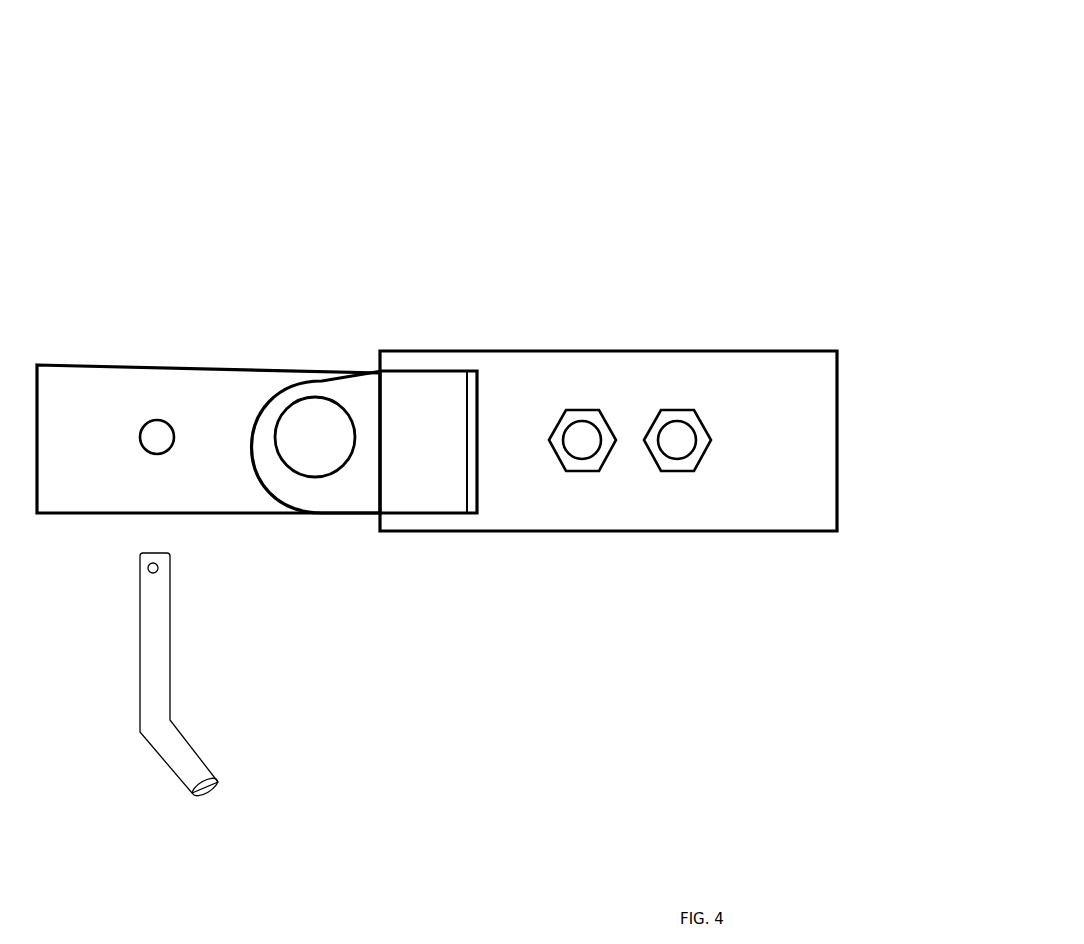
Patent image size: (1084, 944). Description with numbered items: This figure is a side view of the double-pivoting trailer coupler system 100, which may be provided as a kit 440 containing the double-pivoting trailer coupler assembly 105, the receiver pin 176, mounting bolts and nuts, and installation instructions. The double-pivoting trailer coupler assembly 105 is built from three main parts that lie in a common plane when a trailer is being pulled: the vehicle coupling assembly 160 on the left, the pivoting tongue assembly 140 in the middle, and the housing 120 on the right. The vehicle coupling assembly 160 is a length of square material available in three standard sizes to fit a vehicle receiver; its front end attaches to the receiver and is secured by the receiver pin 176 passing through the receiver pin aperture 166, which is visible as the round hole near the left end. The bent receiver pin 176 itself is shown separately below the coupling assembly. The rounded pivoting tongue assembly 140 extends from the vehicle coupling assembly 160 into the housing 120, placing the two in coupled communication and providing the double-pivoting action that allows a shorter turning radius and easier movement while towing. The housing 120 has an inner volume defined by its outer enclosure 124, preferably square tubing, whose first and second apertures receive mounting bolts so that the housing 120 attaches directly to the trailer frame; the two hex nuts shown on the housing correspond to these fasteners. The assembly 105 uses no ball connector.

The double-pivoting trailer coupler system 100 is at (614, 64).
The kit 440 is at (636, 90).
The double-pivoting trailer coupler assembly 105 is at (660, 115).
The vehicle coupling assembly 160 is at (224, 360).
The receiver pin aperture 166 is at (157, 432).
The housing 120 is at (595, 535).
The outer enclosure 124 is at (653, 345).
The pivoting tongue assembly 140 is at (398, 492).
The receiver pin 176 is at (182, 648).